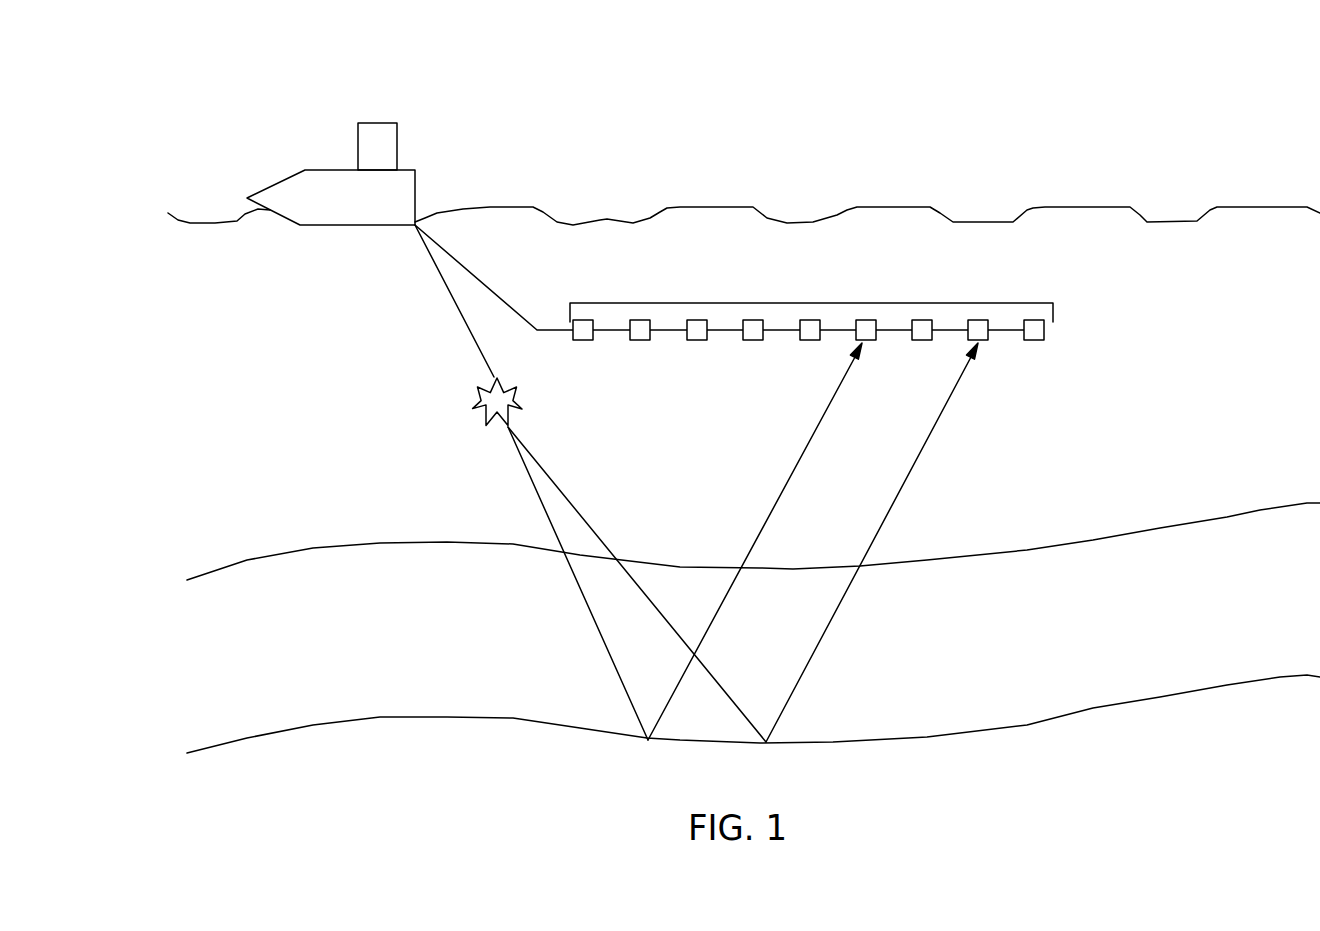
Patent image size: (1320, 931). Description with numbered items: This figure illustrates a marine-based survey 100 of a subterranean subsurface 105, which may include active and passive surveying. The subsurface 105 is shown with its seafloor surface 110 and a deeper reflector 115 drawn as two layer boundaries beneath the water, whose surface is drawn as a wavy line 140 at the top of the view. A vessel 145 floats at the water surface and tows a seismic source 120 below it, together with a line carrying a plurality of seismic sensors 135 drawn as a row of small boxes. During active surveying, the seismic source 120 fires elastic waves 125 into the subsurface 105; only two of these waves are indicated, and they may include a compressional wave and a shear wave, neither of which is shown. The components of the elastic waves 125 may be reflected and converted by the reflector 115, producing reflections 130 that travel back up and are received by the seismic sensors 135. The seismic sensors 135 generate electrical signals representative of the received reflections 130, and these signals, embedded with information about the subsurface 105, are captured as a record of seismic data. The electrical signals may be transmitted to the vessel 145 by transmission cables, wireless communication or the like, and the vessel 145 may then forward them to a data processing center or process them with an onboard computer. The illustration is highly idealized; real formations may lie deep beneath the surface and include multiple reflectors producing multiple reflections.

The marine-based survey 100 is at (230, 108).
The subterranean subsurface 105 is at (382, 637).
The seafloor surface 110 is at (1123, 538).
The reflector 115 is at (1102, 717).
The seismic source 120 is at (522, 405).
The elastic waves 125 is at (537, 487).
The reflections 130 is at (767, 518).
The seismic sensors 135 is at (812, 303).
The water surface 140 is at (1057, 207).
The vessel 145 is at (372, 122).